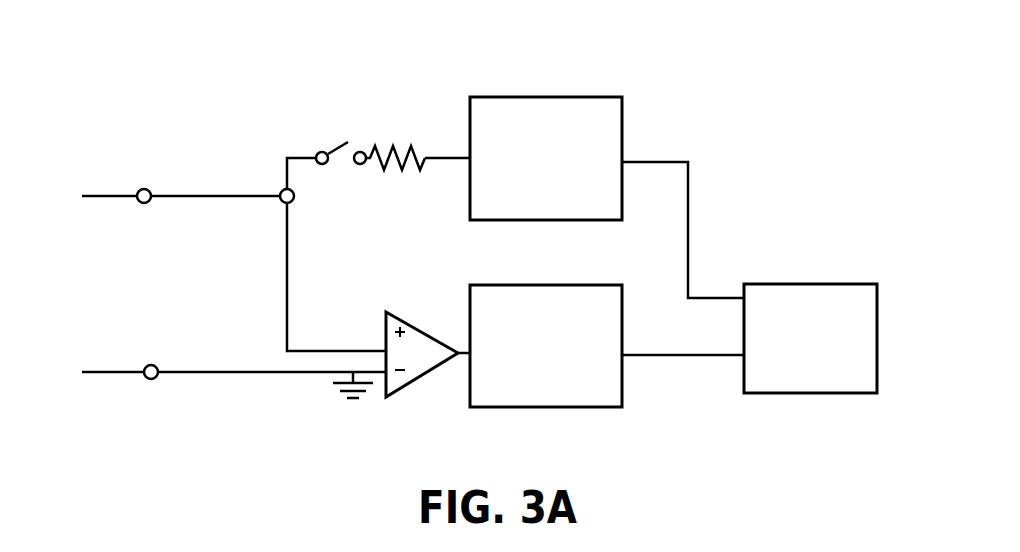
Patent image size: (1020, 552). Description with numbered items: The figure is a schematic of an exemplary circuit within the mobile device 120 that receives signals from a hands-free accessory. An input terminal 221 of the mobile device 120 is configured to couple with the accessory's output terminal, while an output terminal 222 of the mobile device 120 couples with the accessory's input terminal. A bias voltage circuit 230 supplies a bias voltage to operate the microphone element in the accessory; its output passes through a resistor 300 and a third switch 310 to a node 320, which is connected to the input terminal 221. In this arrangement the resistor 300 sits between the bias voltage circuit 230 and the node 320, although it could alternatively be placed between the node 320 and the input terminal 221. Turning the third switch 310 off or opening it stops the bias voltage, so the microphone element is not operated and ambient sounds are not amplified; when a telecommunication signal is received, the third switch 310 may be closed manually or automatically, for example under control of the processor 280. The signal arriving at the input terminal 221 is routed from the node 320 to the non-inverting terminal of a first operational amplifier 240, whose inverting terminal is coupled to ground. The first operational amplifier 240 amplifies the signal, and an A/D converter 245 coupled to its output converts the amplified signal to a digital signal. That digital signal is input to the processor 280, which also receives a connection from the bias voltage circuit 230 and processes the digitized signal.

The mobile device 120 is at (695, 96).
The input terminal 221 is at (184, 176).
The output terminal 222 is at (234, 396).
The bias voltage circuit 230 is at (546, 158).
The first operational amplifier 240 is at (417, 328).
The analog/digital (A/D) converter 245 is at (546, 346).
The processor 280 is at (810, 338).
The resistor 300 is at (395, 138).
The third switch 310 is at (332, 138).
The node 320 is at (308, 196).